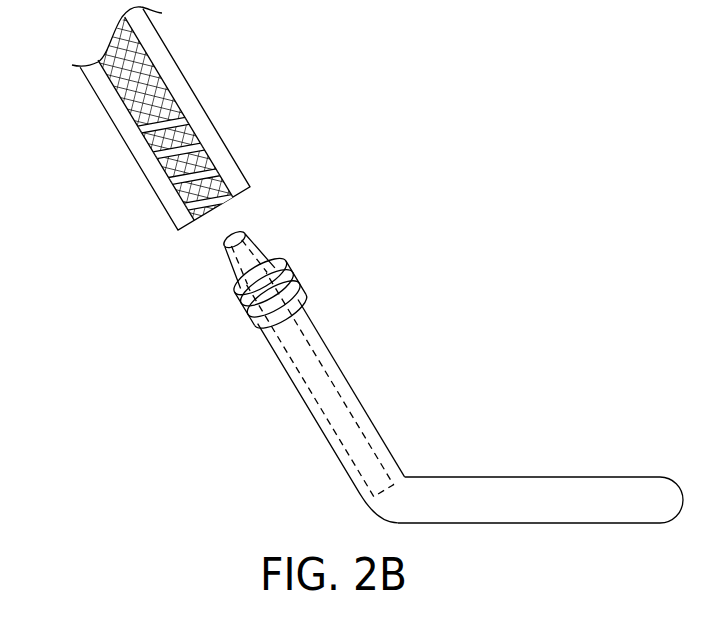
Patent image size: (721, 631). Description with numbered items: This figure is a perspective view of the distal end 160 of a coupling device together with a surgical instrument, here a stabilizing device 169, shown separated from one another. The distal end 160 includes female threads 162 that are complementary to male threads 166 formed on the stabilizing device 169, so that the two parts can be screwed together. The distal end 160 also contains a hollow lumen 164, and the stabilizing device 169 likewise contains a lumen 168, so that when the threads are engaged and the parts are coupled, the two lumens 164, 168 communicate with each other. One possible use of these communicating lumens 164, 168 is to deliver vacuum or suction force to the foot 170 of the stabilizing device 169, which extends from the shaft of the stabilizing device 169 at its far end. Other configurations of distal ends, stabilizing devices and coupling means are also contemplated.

The distal end 160 is at (249, 168).
The female threads 162 is at (202, 180).
The hollow lumen 164 is at (155, 82).
The male threads 166 is at (297, 292).
The lumen 168 is at (324, 392).
The stabilizing device 169 is at (326, 341).
The foot 170 is at (537, 472).